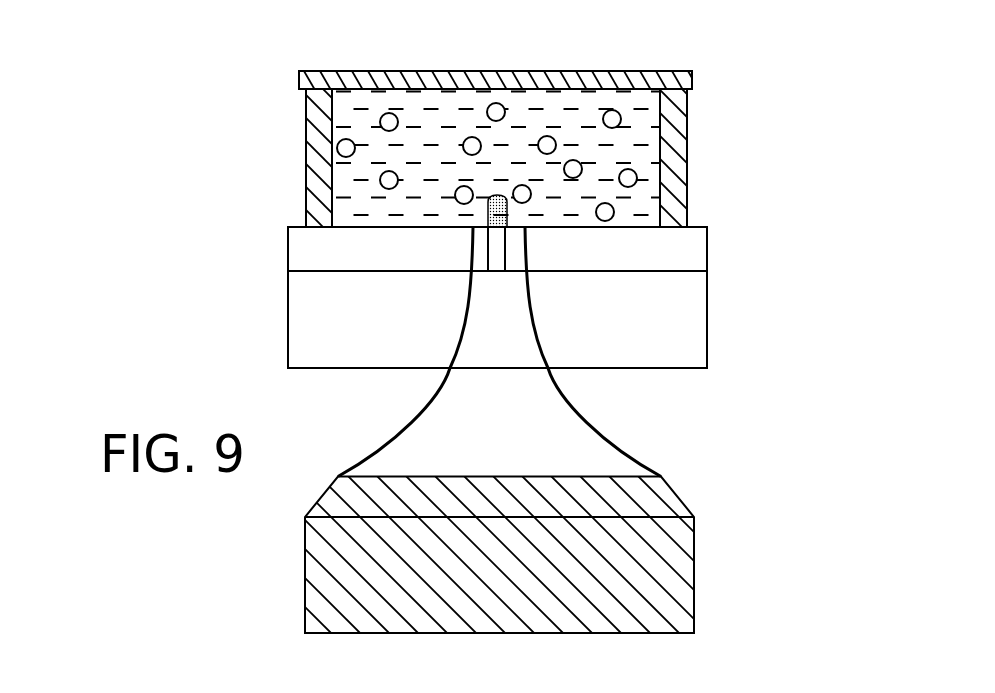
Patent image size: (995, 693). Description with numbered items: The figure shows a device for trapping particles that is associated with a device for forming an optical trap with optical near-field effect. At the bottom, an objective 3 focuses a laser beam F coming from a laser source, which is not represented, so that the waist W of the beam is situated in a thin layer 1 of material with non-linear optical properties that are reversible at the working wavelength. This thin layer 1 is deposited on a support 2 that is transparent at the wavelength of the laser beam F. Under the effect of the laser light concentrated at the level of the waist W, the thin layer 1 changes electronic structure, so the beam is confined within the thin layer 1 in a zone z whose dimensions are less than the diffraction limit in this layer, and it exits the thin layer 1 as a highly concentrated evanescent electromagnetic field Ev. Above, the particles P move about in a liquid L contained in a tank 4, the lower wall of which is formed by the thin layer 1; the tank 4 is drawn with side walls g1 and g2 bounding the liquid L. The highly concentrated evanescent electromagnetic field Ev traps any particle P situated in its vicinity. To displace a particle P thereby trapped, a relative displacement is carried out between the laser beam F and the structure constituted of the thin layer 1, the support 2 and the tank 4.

The tank 4 is at (287, 112).
The left wall of container g1 is at (318, 202).
The right wall of container g2 is at (677, 185).
The liquid L is at (652, 123).
The particles P is at (337, 150).
The evanescent electromagnetic field Ev is at (497, 195).
The zone z is at (493, 242).
The thin layer 1 is at (307, 257).
The support 2 is at (307, 332).
The waist W is at (538, 330).
The laser beam F is at (578, 438).
The objective 3 is at (678, 578).